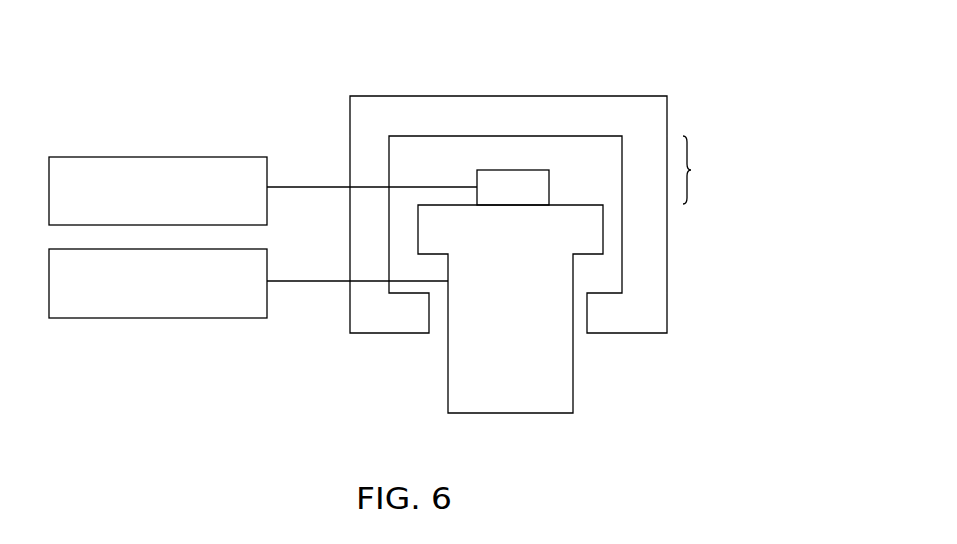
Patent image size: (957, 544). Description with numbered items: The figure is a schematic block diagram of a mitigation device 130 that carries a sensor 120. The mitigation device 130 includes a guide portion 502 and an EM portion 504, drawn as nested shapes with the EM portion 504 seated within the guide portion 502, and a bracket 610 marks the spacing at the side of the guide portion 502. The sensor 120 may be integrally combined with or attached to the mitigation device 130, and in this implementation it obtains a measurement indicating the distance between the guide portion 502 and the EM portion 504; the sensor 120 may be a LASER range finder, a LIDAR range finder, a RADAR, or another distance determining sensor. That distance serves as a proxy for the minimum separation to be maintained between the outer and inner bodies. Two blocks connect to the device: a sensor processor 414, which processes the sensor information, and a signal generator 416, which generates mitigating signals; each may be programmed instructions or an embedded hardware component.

The mitigation device 130 is at (294, 109).
The guide portion 502 is at (646, 125).
The EM portion 504 is at (473, 370).
The sensor 120 is at (520, 185).
The gap / wall thickness 610 is at (713, 170).
The sensor processor 414 is at (257, 215).
The mitigating signal generator 416 is at (257, 308).